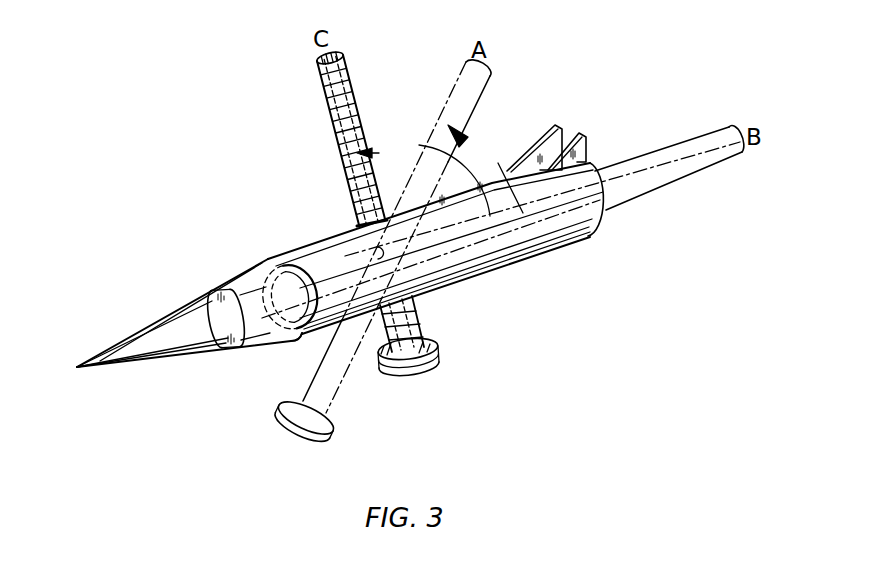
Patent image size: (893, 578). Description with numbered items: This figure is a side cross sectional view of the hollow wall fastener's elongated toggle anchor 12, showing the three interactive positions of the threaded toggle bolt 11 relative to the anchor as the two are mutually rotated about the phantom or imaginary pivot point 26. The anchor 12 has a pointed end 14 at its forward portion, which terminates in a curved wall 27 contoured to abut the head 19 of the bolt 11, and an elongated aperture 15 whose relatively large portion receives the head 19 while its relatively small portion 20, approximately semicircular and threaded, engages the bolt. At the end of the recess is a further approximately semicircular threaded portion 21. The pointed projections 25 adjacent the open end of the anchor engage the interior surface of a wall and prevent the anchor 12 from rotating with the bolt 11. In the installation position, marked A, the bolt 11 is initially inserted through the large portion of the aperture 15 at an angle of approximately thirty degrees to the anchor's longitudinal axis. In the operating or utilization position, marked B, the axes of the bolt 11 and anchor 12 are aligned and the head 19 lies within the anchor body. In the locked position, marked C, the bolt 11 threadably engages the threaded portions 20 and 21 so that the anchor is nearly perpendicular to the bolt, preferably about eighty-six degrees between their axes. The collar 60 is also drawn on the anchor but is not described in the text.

The threaded toggle bolt 11 is at (323, 96).
The elongated toggle anchor 12 is at (507, 263).
The pointed end 14 is at (146, 327).
The elongated aperture 15 is at (310, 334).
The head 19 is at (271, 296).
The relatively small portion 20 is at (410, 299).
The semicircular threaded portion 21 is at (356, 226).
The pointed projections 25 is at (562, 127).
The pivot point 26 is at (377, 249).
The curved wall 27 is at (271, 324).
The collar 60 is at (230, 349).